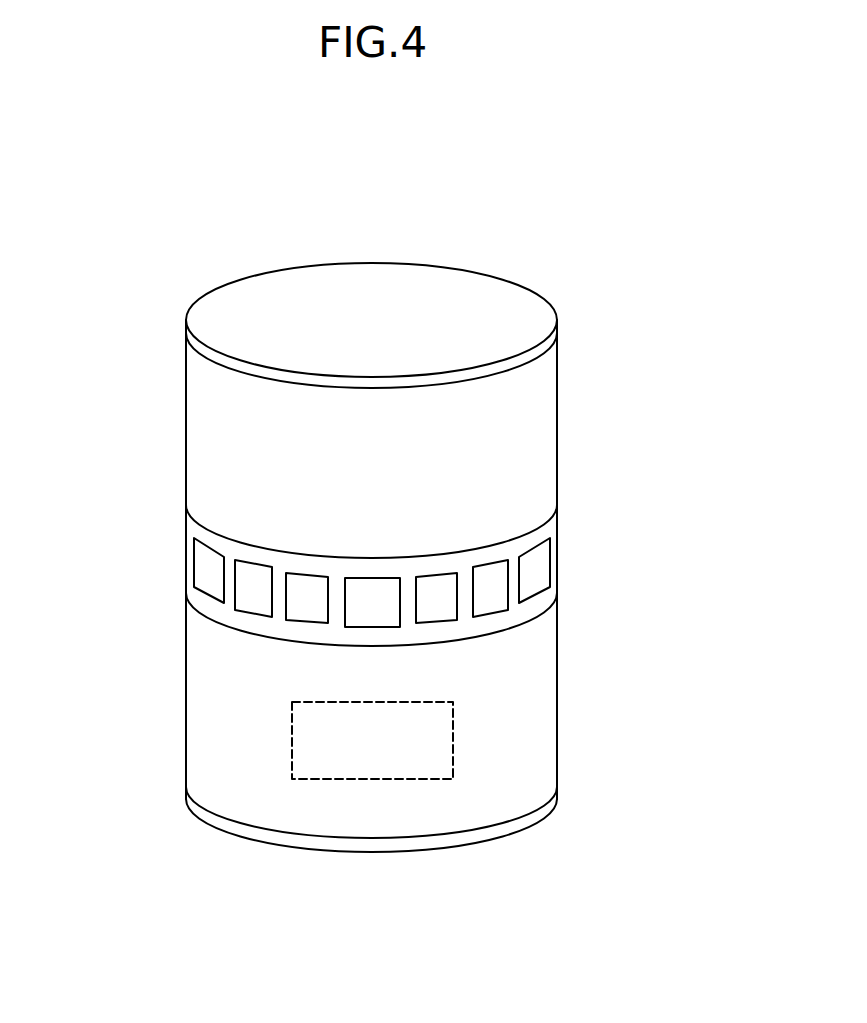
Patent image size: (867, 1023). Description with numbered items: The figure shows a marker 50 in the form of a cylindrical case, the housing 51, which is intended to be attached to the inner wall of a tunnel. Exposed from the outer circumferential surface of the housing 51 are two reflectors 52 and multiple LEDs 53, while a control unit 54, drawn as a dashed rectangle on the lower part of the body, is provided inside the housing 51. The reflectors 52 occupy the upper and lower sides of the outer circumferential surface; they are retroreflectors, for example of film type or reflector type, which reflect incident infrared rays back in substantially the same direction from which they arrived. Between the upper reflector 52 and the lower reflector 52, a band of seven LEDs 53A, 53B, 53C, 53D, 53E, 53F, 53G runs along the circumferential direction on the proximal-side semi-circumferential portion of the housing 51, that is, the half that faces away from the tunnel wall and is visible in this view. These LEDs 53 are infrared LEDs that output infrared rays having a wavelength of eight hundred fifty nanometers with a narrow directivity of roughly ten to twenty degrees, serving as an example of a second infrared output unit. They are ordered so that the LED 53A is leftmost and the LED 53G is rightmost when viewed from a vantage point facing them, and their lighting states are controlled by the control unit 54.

The marker 50 is at (553, 214).
The housing 51 is at (379, 278).
The reflectors 52 is at (538, 423).
The LEDs 53 is at (78, 423).
The LED 53A is at (205, 567).
The LED 53B is at (252, 570).
The LED 53C is at (309, 585).
The LED 53D is at (372, 588).
The LED 53E is at (437, 583).
The LED 53F is at (493, 573).
The LED 53G is at (539, 566).
The control unit 54 is at (292, 737).